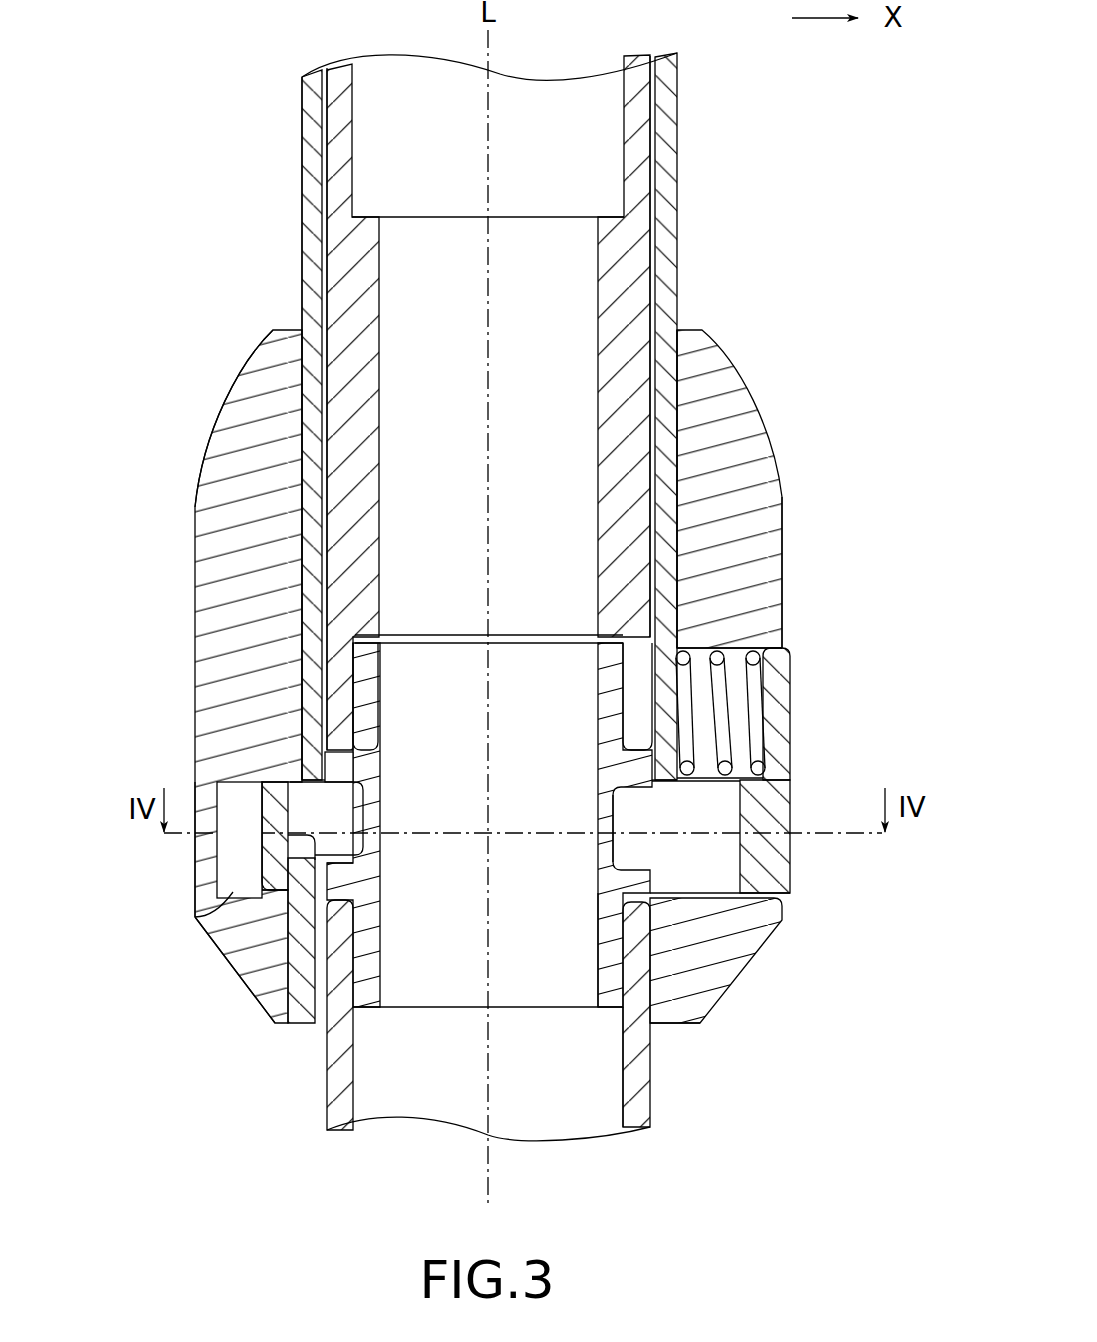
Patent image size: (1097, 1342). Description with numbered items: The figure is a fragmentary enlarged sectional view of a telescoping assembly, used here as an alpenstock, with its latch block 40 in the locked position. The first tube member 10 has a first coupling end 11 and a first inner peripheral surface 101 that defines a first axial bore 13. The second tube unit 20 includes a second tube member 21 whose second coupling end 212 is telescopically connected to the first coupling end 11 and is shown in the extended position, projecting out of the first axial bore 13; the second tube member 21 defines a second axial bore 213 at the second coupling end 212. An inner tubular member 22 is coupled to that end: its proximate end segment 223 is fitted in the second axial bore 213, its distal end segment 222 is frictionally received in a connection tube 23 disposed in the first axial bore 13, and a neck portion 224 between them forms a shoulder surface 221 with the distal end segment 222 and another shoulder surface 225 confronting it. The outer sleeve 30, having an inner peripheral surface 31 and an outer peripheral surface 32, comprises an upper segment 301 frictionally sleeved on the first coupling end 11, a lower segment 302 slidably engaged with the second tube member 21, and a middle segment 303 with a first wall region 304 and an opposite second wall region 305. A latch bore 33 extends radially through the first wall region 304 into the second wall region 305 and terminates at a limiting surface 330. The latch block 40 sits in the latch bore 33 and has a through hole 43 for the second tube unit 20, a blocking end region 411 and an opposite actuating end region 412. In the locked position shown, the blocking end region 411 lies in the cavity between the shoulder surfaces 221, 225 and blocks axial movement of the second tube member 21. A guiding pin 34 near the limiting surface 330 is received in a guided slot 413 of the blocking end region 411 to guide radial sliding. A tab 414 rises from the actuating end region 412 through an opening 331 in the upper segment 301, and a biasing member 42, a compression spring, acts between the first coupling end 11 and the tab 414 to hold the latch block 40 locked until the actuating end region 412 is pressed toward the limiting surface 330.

The first tube member 10 is at (457, 416).
The first inner peripheral surface 101 is at (322, 122).
The first coupling end 11 is at (310, 690).
The first axial bore 13 is at (653, 218).
The connection tube 23 is at (546, 402).
The outer sleeve 30 is at (498, 676).
The upper segment 301 is at (248, 395).
The lower segment 302 is at (248, 973).
The middle segment 303 is at (207, 783).
The first wall region 304 is at (803, 887).
The second wall region 305 is at (188, 872).
The inner peripheral surface 31 is at (678, 637).
The outer peripheral surface 32 is at (783, 577).
The latch bore 33 is at (237, 883).
The limiting surface 330 is at (298, 892).
The opening 331 is at (763, 648).
The guiding pin 34 is at (302, 849).
The second tube unit 20 is at (493, 872).
The second tube member 21 is at (566, 1020).
The second coupling end 212 is at (690, 1020).
The second axial bore 213 is at (612, 1045).
The inner tubular member 22 is at (493, 824).
The shoulder surface 221 is at (350, 782).
The distal end segment 222 is at (760, 672).
The proximate end segment 223 is at (610, 947).
The neck portion 224 is at (607, 813).
The another shoulder surface 225 is at (342, 862).
The latch block 40 is at (509, 835).
The blocking end region 411 is at (347, 847).
The actuating end region 412 is at (775, 855).
The guided slot 413 is at (297, 780).
The tab 414 is at (775, 730).
The biasing member 42 is at (753, 698).
The through hole 43 is at (635, 885).